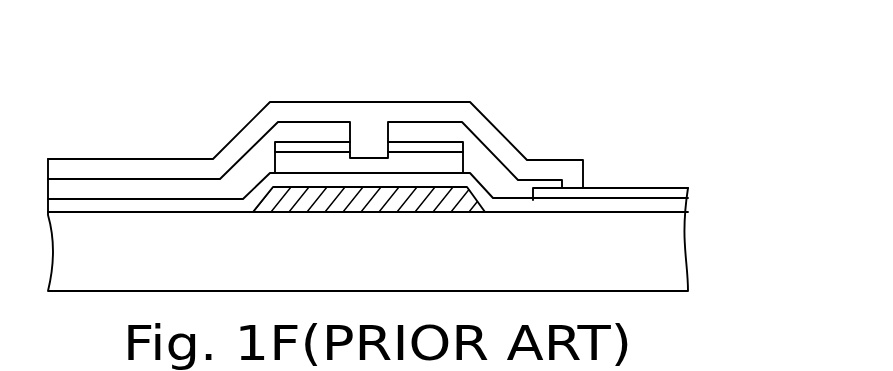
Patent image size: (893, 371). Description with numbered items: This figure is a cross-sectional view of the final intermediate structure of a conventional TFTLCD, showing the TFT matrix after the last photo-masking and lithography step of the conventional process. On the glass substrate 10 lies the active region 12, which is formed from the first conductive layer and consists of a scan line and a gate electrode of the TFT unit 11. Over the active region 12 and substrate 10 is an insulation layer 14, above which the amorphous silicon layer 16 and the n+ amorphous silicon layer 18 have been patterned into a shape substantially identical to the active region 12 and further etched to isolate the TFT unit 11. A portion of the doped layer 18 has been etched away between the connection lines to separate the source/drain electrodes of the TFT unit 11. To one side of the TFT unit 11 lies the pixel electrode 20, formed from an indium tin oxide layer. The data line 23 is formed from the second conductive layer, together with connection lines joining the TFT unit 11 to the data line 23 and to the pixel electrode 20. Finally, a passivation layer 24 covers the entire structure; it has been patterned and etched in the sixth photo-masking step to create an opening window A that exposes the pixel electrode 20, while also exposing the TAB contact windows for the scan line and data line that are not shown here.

The glass substrate 10 is at (648, 243).
The TFT unit 11 is at (317, 137).
The active region 12 is at (375, 197).
The insulation layer 14 is at (660, 205).
The amorphous silicon layer 16 is at (297, 160).
The n+ amorphous silicon layer 18 is at (407, 145).
The pixel electrode 20 is at (617, 192).
The data line 23 is at (122, 186).
The passivation layer 24 is at (495, 143).
The opening window A is at (623, 137).